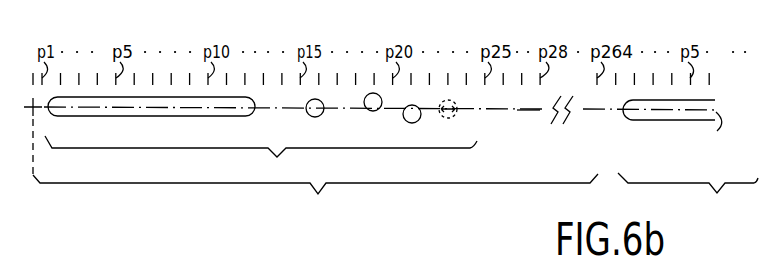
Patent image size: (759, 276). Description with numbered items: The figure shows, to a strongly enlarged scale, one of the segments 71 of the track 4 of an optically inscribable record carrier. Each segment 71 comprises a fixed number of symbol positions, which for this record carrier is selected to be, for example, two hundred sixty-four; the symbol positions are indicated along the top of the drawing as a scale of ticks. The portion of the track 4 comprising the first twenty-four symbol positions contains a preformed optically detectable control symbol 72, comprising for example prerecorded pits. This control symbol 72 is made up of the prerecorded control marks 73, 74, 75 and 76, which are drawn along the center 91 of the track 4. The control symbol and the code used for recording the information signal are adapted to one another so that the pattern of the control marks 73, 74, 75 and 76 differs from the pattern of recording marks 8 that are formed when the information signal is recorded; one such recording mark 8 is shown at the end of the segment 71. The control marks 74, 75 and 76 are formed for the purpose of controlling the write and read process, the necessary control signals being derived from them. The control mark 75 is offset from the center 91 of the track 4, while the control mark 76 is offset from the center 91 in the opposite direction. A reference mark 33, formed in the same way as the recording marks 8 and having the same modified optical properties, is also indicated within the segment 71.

The segment 71 is at (752, 31).
The control symbol 72 is at (261, 157).
The control mark 73 is at (187, 116).
The control mark 74 is at (311, 116).
The control mark 75 is at (372, 111).
The control mark 76 is at (418, 121).
The reference mark 33 is at (464, 115).
The center of the track 91 is at (517, 111).
The recording mark 8 is at (663, 115).
The track 4 is at (718, 130).